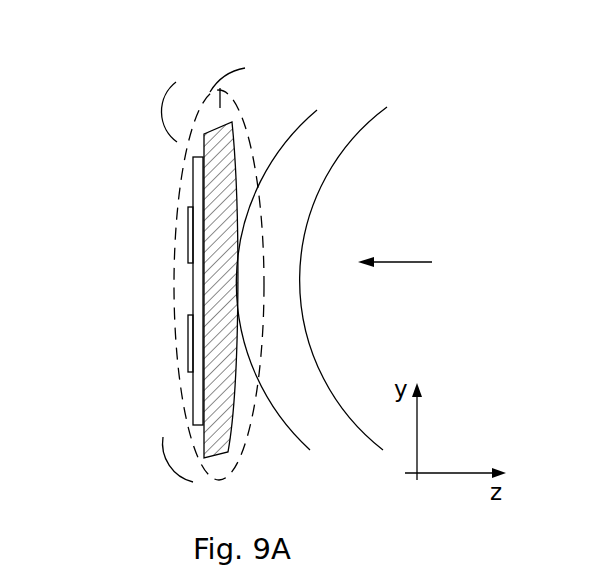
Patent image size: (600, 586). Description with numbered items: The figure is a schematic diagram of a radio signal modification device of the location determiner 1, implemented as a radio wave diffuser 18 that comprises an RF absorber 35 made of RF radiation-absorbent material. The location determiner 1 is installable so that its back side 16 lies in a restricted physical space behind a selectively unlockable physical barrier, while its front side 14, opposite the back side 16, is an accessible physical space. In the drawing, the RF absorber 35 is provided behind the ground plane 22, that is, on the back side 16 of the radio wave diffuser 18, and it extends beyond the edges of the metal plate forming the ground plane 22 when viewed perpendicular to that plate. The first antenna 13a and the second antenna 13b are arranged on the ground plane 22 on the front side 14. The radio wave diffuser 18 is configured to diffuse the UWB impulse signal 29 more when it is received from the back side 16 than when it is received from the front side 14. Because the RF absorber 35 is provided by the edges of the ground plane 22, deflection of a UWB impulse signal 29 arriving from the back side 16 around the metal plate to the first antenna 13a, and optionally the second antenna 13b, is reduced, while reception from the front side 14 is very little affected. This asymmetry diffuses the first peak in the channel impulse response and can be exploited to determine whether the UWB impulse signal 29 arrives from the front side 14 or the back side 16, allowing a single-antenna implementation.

The location determiner 1 is at (472, 104).
The front side 14 is at (37, 128).
The back side 16 is at (478, 150).
The radio wave diffuser 18 is at (243, 108).
The first antenna 13a is at (190, 254).
The second antenna 13b is at (190, 350).
The ground plane 22 is at (188, 400).
The UWB impulse signal 29 is at (412, 264).
The RF absorber 35 is at (240, 437).